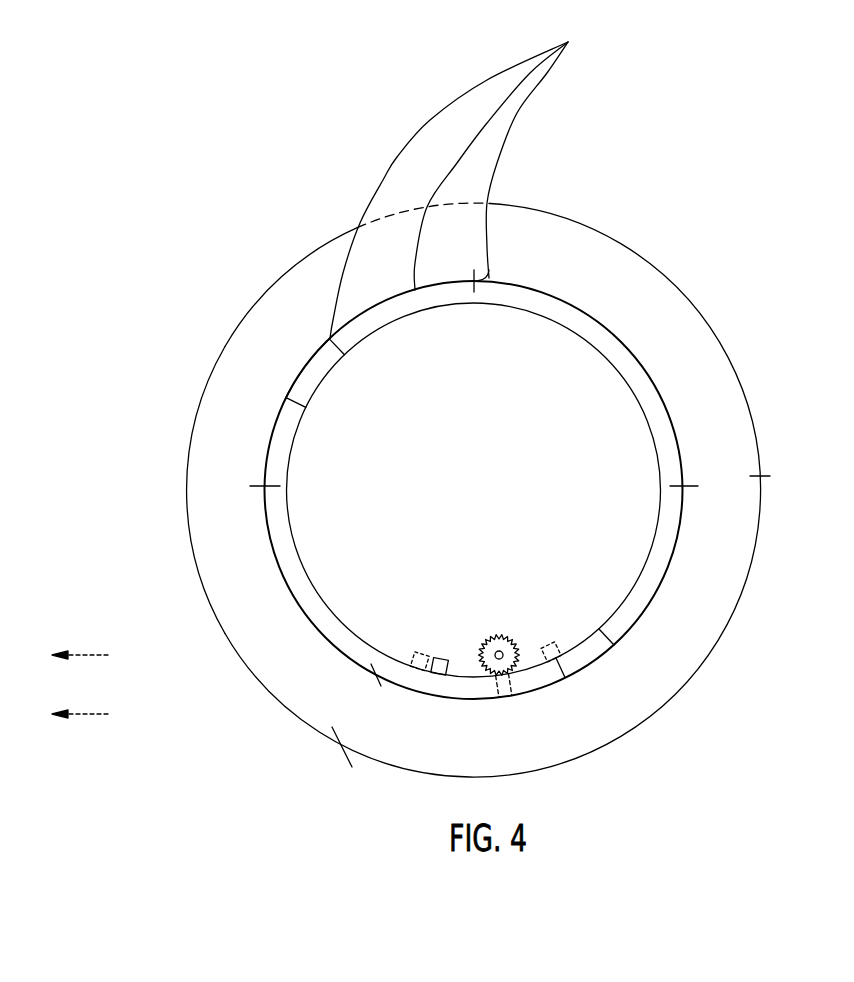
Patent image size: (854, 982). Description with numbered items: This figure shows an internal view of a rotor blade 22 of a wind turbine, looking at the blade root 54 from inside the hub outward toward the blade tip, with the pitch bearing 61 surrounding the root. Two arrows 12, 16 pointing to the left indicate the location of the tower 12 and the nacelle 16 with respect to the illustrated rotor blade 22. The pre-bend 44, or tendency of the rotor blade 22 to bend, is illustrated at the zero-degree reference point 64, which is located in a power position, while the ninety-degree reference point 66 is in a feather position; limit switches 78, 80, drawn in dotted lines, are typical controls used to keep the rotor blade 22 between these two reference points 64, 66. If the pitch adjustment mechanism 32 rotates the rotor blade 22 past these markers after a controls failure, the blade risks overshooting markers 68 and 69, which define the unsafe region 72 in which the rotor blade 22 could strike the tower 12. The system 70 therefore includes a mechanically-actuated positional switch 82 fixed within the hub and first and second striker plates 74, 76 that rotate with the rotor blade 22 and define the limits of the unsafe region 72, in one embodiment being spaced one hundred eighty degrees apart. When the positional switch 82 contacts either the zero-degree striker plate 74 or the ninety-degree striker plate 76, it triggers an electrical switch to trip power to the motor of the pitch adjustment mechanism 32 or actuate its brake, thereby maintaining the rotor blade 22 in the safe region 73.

The tower 12 is at (83, 718).
The nacelle 16 is at (80, 655).
The rotor blade 22 is at (358, 230).
The pitch adjustment mechanism 32 is at (500, 634).
The pre-bend 44 is at (490, 167).
The blade root 54 is at (334, 645).
The pitch bearing 61 is at (652, 582).
The 0-degree reference point 64 is at (493, 280).
The 90-degree reference point 66 is at (253, 487).
The marker 68 is at (696, 487).
The marker 69 is at (376, 678).
The system 70 is at (140, 368).
The unsafe region 72 is at (660, 712).
The safe region 73 is at (188, 494).
The 0-degree striker plate 74 is at (595, 637).
The 90-degree striker plate 76 is at (317, 368).
The limit switch 78 is at (550, 647).
The limit switch 80 is at (412, 655).
The positional switch 82 is at (432, 658).